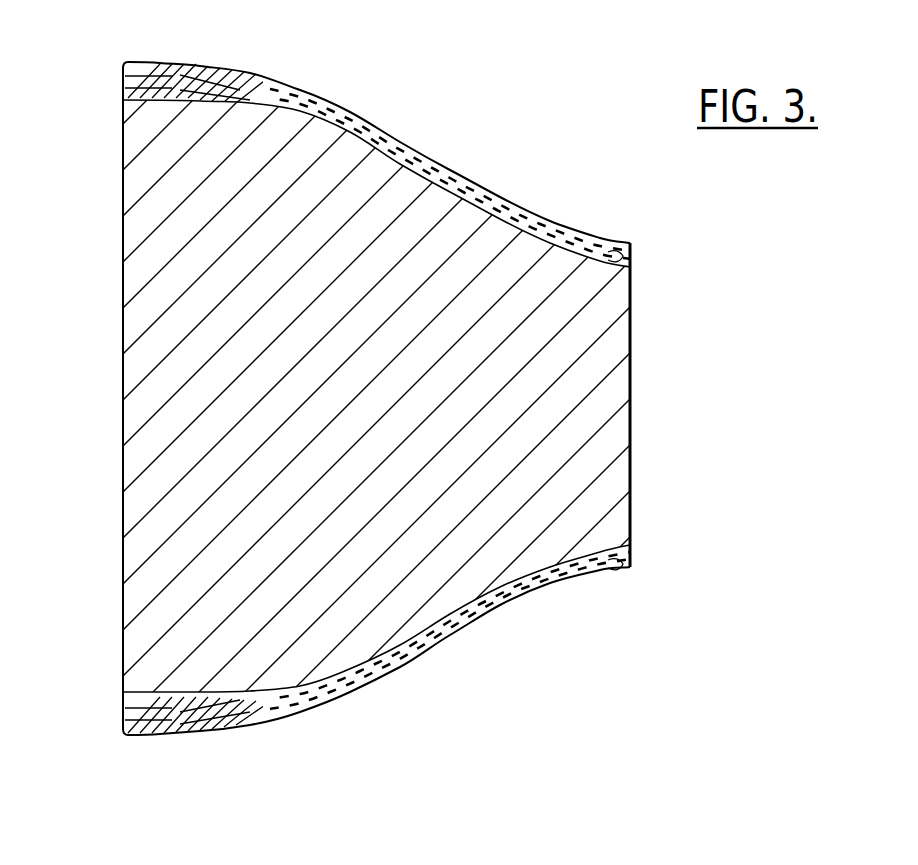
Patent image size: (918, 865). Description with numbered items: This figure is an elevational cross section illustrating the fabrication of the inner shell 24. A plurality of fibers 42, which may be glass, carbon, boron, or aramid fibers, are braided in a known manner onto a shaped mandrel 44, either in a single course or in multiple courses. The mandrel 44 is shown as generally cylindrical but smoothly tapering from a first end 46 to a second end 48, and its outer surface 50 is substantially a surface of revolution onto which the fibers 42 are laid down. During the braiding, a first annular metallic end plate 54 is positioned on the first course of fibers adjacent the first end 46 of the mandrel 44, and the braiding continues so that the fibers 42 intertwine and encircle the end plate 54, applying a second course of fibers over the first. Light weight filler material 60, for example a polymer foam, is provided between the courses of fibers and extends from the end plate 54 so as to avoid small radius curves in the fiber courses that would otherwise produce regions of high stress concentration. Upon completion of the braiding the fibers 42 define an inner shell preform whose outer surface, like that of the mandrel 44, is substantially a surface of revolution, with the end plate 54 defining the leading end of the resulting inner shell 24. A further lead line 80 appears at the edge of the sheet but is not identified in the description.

The inner shell 24 is at (508, 180).
The fibers 42 is at (598, 240).
The shaped mandrel 44 is at (612, 298).
The first end 46 is at (124, 287).
The second end 48 is at (632, 478).
The outer surface 50 is at (505, 593).
The first annular metallic end plate 54 is at (170, 68).
The filler material 60 is at (222, 70).
The lead line element 80 is at (672, 0).